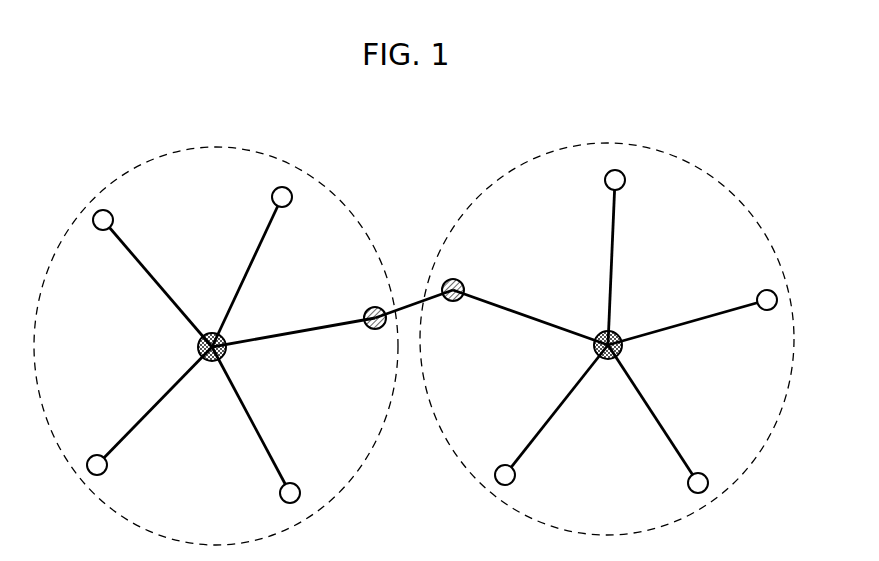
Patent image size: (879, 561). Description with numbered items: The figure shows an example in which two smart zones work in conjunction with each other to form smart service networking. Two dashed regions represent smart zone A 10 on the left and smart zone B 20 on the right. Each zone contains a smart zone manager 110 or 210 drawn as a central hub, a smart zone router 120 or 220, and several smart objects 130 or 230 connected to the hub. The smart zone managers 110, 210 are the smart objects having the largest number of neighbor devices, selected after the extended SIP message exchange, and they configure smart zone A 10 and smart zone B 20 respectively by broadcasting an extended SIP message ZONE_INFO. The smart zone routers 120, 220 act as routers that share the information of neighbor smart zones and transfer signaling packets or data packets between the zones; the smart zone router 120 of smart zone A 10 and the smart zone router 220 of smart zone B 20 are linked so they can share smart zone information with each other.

The smart zone A 10 is at (215, 147).
The smart zone B 20 is at (625, 143).
The smart zone manager 110 is at (197, 351).
The smart zone router 120 is at (373, 330).
The smart objects 130 is at (113, 218).
The smart zone manager 210 is at (617, 333).
The smart zone router 220 is at (460, 280).
The smart objects 230 is at (625, 185).